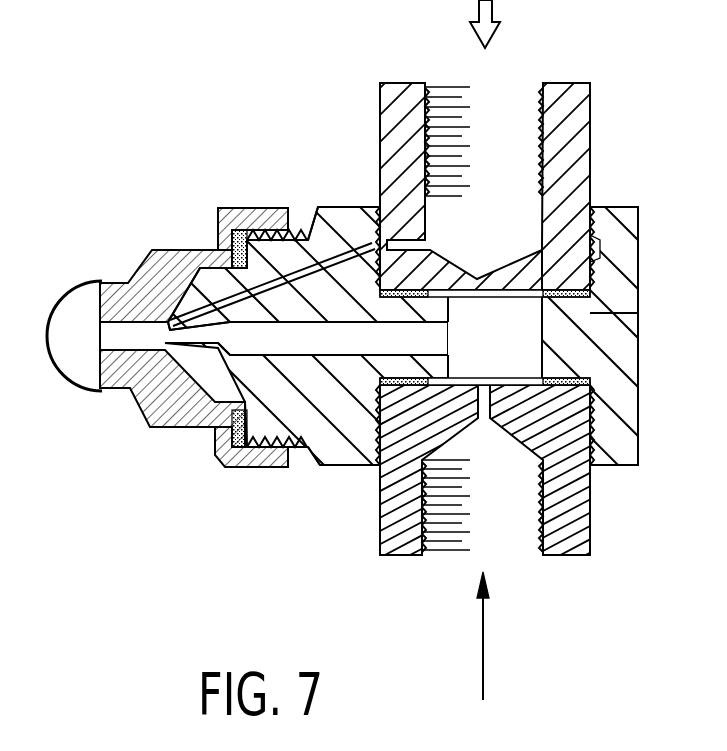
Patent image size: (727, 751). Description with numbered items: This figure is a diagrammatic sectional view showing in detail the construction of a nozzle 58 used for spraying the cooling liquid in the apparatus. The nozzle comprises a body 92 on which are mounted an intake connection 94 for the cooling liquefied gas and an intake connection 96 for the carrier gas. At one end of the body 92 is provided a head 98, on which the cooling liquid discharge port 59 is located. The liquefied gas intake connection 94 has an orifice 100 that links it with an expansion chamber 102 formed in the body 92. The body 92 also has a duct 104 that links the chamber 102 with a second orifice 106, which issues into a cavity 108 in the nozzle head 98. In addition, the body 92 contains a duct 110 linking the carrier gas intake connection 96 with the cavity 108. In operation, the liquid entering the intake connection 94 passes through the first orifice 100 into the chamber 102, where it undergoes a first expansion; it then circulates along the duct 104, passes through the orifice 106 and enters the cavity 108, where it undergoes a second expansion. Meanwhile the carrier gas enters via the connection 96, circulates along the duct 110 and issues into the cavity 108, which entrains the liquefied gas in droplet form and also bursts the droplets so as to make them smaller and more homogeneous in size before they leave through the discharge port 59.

The nozzle 58 is at (628, 186).
The cooling liquid discharge port 59 is at (100, 338).
The body 92 is at (598, 360).
The intake connection for the cooling liquefied gas 94 is at (575, 518).
The intake connection for the carrier gas 96 is at (578, 92).
The head 98 is at (158, 413).
The orifice 100 is at (483, 405).
The expansion chamber 102 is at (638, 313).
The duct 104 is at (377, 342).
The second orifice 106 is at (235, 343).
The cavity 108 is at (145, 337).
The duct 110 is at (318, 268).